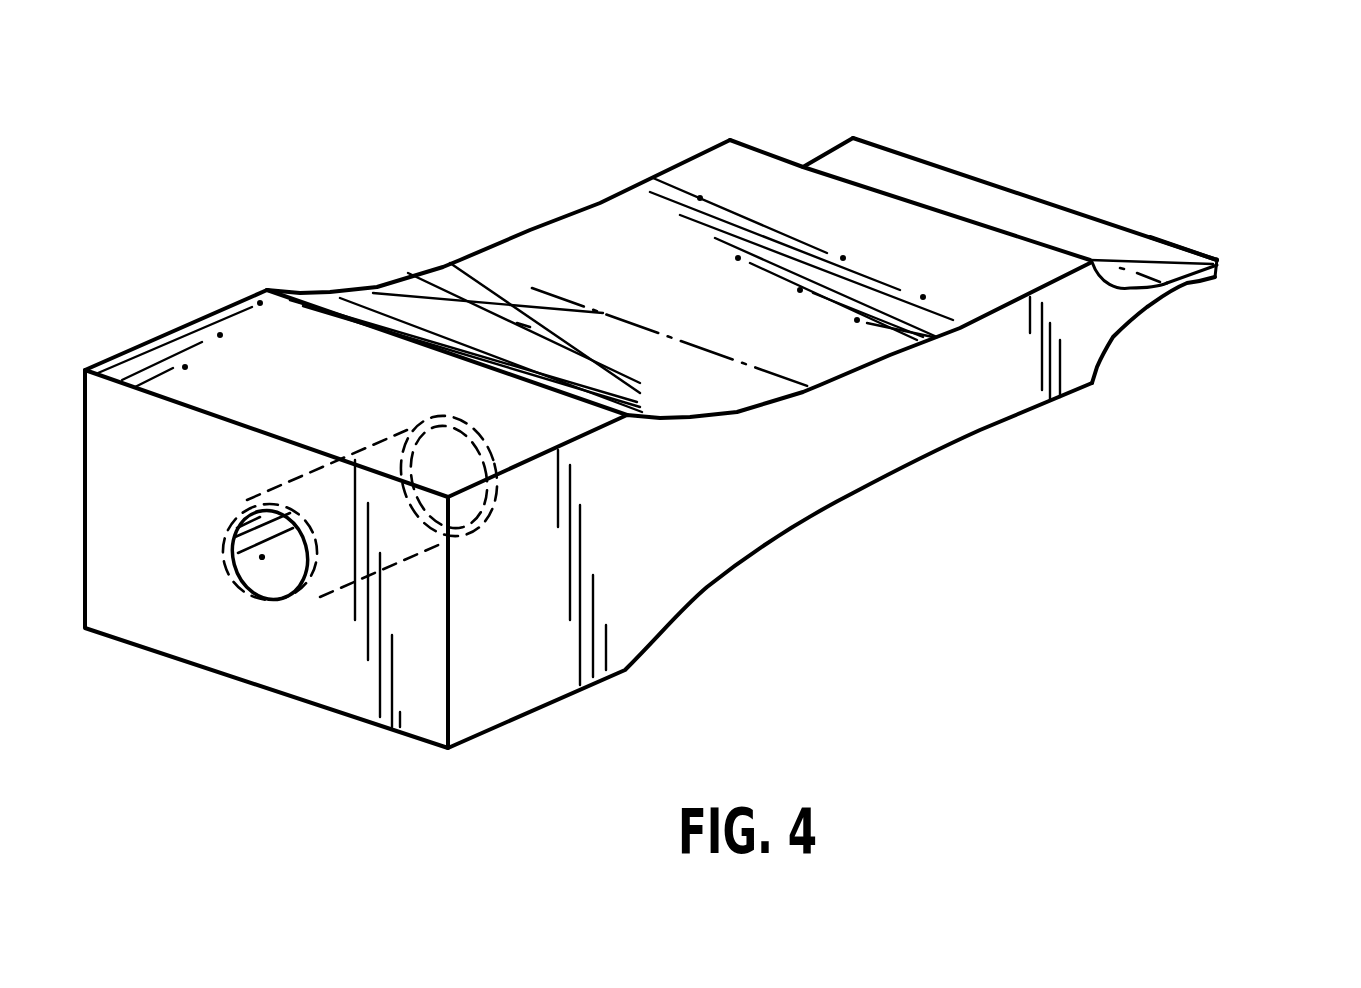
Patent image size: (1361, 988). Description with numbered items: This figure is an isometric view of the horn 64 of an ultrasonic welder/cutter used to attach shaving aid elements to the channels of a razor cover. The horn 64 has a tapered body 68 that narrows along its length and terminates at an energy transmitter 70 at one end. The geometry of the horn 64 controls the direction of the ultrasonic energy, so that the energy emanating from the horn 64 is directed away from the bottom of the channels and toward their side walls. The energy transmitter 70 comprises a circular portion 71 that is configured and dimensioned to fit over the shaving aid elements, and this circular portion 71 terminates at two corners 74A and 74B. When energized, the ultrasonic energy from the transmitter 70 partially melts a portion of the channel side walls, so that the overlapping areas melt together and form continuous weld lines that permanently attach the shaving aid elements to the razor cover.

The horn 64 is at (527, 272).
The tapered body 68 is at (410, 287).
The energy transmitter 70 is at (1028, 217).
The circular portion 71 is at (1217, 265).
The corner 74A is at (1200, 250).
The corner 74B is at (1220, 280).